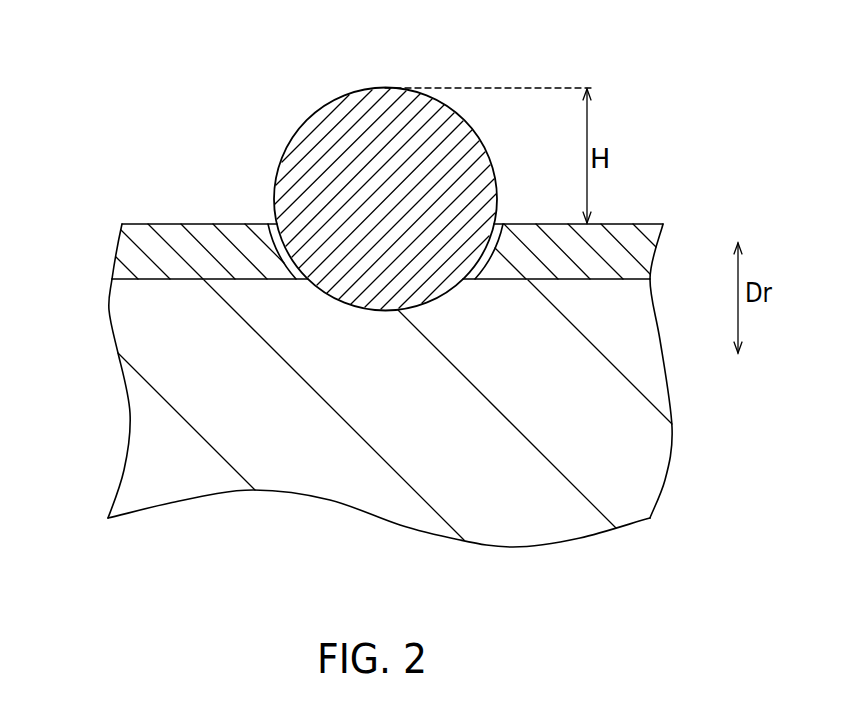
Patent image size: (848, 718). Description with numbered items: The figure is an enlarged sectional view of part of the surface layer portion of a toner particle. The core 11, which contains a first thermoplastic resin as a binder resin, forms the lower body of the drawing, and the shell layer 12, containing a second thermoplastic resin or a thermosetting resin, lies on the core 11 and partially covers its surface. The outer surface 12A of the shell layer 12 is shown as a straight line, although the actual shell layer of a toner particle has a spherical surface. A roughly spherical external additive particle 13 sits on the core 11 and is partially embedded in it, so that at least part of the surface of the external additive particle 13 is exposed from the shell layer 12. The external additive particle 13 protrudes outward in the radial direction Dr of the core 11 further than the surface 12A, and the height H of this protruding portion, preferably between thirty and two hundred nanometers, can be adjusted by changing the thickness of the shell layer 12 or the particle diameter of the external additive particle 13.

The core 11 is at (182, 366).
The shell layer 12 is at (128, 253).
The surface of the shell layer 12A is at (228, 224).
The external additive particle 13 is at (340, 128).